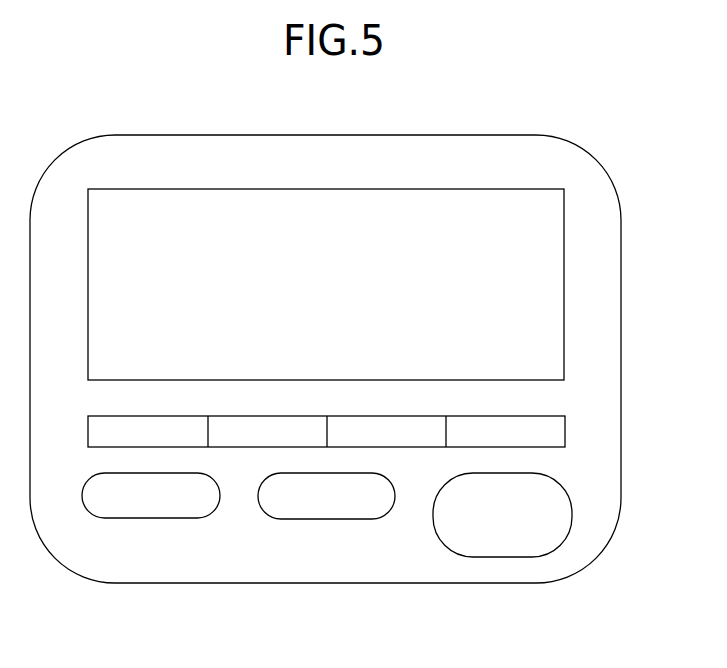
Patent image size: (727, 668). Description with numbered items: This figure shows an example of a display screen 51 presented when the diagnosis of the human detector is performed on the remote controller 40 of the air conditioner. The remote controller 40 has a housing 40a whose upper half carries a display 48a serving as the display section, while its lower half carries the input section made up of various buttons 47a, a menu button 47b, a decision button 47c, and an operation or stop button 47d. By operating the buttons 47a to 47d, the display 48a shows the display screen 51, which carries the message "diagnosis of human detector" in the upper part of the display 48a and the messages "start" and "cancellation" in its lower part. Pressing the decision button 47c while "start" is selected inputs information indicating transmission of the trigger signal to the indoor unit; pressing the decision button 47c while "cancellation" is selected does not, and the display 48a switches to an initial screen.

The remote controller 40 is at (446, 124).
The housing 40a is at (255, 135).
The display 48a is at (564, 256).
The display screen 51 is at (312, 201).
The various buttons 47a is at (565, 430).
The menu button 47b is at (147, 518).
The decision button 47c is at (327, 519).
The operation or stop button 47d is at (502, 557).